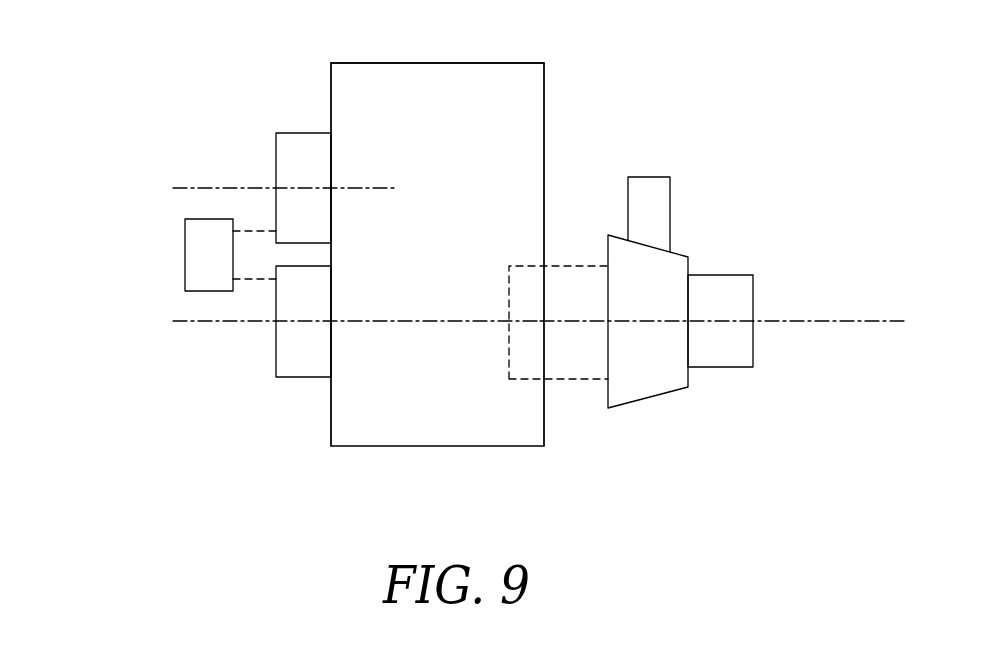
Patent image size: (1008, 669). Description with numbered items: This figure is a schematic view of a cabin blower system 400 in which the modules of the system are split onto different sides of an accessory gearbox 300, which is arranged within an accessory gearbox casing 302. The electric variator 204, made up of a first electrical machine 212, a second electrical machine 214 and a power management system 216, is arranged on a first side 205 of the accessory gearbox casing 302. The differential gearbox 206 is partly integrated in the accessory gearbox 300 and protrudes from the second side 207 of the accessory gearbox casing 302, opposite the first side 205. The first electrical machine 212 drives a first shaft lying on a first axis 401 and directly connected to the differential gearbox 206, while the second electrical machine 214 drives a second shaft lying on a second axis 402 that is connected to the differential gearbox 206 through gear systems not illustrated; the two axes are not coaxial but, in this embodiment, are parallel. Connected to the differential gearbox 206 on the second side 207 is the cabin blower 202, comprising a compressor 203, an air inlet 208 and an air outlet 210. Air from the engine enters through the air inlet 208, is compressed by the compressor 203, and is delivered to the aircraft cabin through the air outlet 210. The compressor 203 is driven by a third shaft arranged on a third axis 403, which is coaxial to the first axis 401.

The cabin blower system 400 is at (772, 61).
The accessory gearbox 300 is at (437, 254).
The accessory gearbox casing 302 is at (438, 63).
The first side 205 is at (331, 85).
The second side 207 is at (544, 82).
The second electrical machine 214 is at (293, 153).
The first electrical machine 212 is at (297, 364).
The power management system 216 is at (208, 254).
The electric variator 204 is at (150, 298).
The second axis 402 is at (210, 188).
The first axis 401 is at (212, 322).
The third axis 403 is at (867, 320).
The differential gearbox 206 is at (558, 322).
The compressor 203 is at (650, 378).
The air outlet 210 is at (648, 192).
The air inlet 208 is at (737, 347).
The cabin blower 202 is at (710, 248).